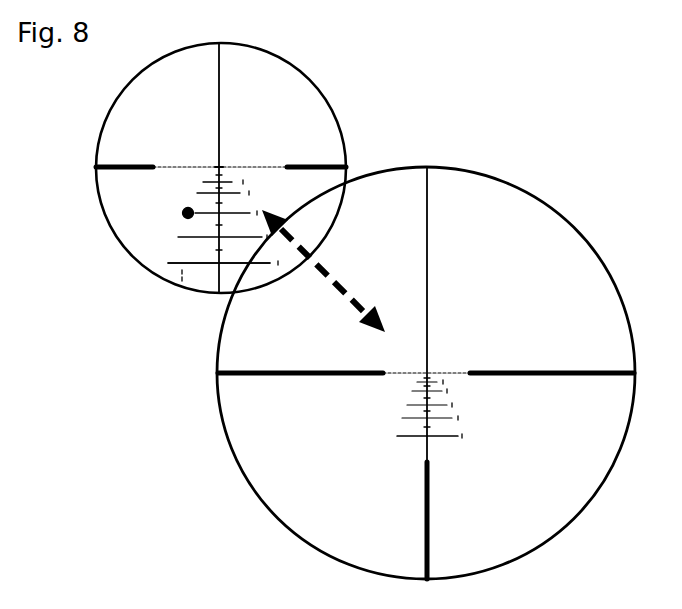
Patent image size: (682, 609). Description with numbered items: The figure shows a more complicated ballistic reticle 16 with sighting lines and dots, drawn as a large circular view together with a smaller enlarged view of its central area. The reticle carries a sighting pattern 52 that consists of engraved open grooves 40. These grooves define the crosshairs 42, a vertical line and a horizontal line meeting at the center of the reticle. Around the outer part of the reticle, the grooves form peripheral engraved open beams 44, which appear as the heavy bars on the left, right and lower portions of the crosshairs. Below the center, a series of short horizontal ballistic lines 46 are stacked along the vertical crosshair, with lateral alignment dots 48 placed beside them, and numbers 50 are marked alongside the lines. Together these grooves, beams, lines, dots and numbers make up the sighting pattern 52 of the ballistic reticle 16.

The ballistic reticle 16 is at (583, 233).
The engraved open grooves 40 is at (222, 107).
The crosshairs 42 is at (222, 127).
The peripheral engraved open beams 44 is at (130, 167).
The ballistic lines 46 is at (255, 263).
The lateral alignment dots 48 is at (193, 263).
The numbers 50 is at (250, 193).
The sighting pattern 52 is at (484, 326).